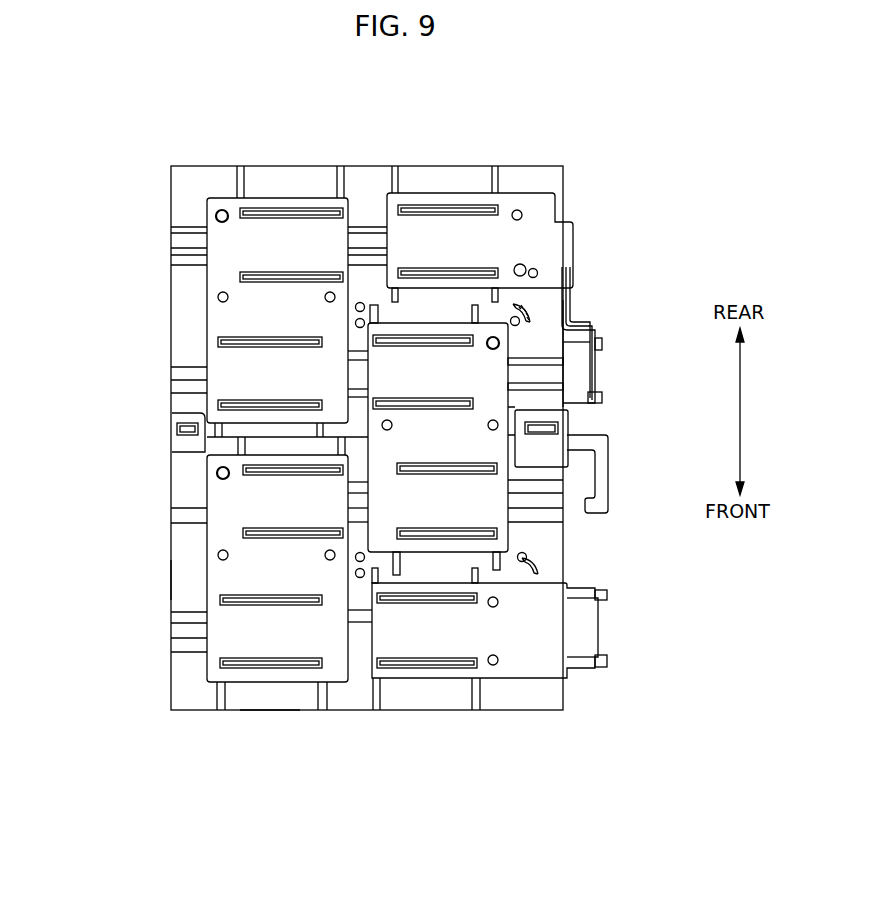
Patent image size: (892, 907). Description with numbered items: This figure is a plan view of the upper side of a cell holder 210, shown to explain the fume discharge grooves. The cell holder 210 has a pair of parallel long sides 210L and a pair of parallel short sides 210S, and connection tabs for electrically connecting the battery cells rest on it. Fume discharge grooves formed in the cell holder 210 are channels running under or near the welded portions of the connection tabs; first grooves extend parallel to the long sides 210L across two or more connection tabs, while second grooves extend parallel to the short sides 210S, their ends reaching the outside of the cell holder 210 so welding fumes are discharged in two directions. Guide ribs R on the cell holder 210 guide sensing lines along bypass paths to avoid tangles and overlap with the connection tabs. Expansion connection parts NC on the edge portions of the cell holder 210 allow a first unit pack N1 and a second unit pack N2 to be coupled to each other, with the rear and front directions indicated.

The cell holder 210 is at (390, 441).
The short side 210S is at (171, 568).
The long side 210L is at (270, 710).
The guide rib R is at (530, 306).
The first unit pack N1 is at (623, 557).
The second unit pack N2 is at (618, 285).
The expansion connection part NC is at (592, 422).